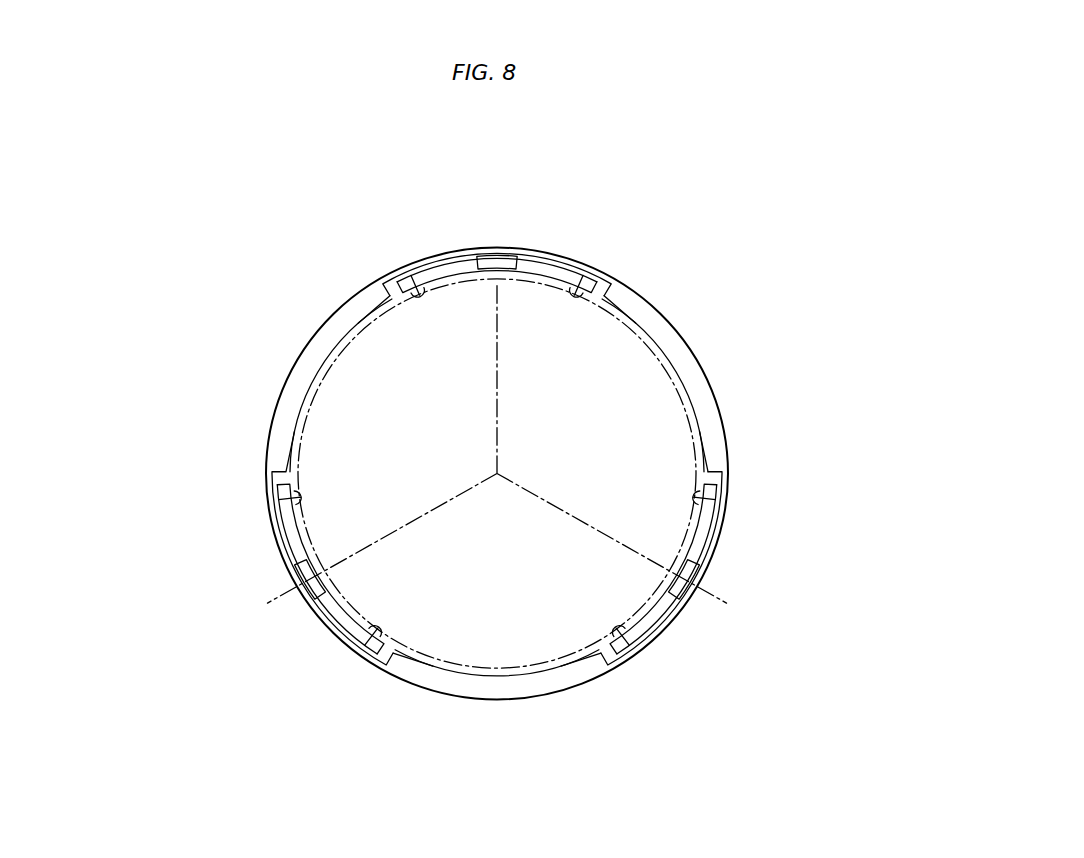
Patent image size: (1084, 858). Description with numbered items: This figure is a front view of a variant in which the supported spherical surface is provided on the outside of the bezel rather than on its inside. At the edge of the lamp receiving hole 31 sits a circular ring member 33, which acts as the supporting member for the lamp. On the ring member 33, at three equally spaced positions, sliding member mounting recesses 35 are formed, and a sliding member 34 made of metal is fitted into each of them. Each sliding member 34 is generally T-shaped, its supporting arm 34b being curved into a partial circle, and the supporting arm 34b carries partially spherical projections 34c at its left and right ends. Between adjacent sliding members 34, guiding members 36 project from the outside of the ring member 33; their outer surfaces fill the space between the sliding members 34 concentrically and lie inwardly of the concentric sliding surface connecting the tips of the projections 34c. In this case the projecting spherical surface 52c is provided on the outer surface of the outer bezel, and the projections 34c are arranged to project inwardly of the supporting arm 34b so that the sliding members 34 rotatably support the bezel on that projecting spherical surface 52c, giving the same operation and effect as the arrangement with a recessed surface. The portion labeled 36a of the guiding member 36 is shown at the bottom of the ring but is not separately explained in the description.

The lamp receiving hole 31 is at (655, 432).
The ring member 33 is at (712, 372).
The sliding member 34 is at (538, 259).
The supporting arm 34b is at (462, 252).
The projection 34c is at (416, 280).
The sliding member mounting recess 35 is at (506, 255).
The guiding member 36 is at (318, 352).
The ring bottom portion 36a is at (553, 683).
The projecting spherical surface 52c is at (298, 433).